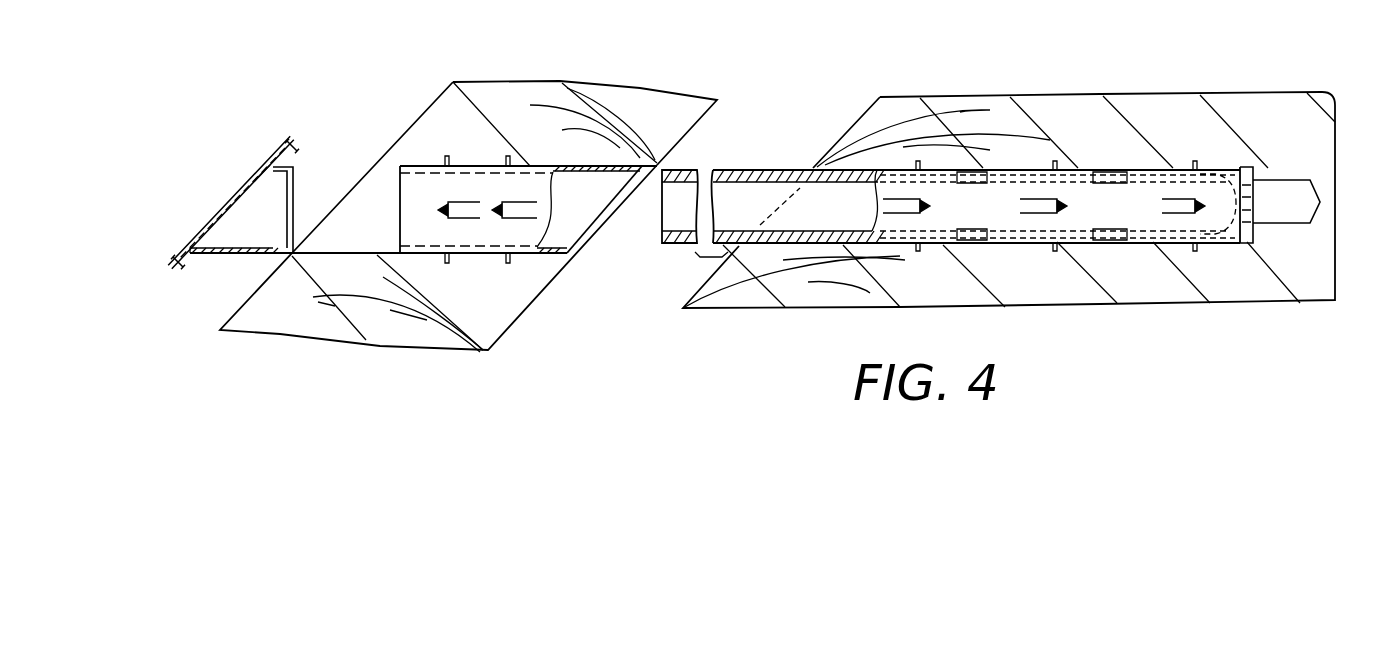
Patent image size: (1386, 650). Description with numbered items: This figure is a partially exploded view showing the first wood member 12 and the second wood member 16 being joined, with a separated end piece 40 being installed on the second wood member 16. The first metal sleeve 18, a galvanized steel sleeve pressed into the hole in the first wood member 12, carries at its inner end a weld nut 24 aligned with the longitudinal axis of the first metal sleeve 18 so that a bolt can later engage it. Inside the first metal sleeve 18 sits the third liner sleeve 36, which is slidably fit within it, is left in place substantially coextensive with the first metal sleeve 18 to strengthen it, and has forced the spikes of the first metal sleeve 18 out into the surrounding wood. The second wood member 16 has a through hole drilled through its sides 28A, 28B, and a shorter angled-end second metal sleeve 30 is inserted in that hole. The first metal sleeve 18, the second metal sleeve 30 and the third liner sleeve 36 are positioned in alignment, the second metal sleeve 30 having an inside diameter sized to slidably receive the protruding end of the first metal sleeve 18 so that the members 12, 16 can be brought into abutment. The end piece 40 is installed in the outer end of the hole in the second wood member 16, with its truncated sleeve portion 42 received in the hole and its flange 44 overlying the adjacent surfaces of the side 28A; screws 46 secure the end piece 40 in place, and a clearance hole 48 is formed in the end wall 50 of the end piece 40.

The first wood member 12 is at (1012, 65).
The second wood member 16 is at (443, 106).
The first metal sleeve 18 is at (783, 169).
The weld nut 24 is at (1253, 180).
The side 28A is at (407, 130).
The side 28B is at (527, 308).
The second metal sleeve 30 is at (540, 161).
The third liner sleeve 36 is at (750, 166).
The end piece 40 is at (202, 260).
The truncated sleeve portion 42 is at (231, 258).
The flange 44 is at (266, 168).
The screws 46 is at (287, 137).
The clearance hole 48 is at (290, 220).
The end wall 50 is at (258, 180).